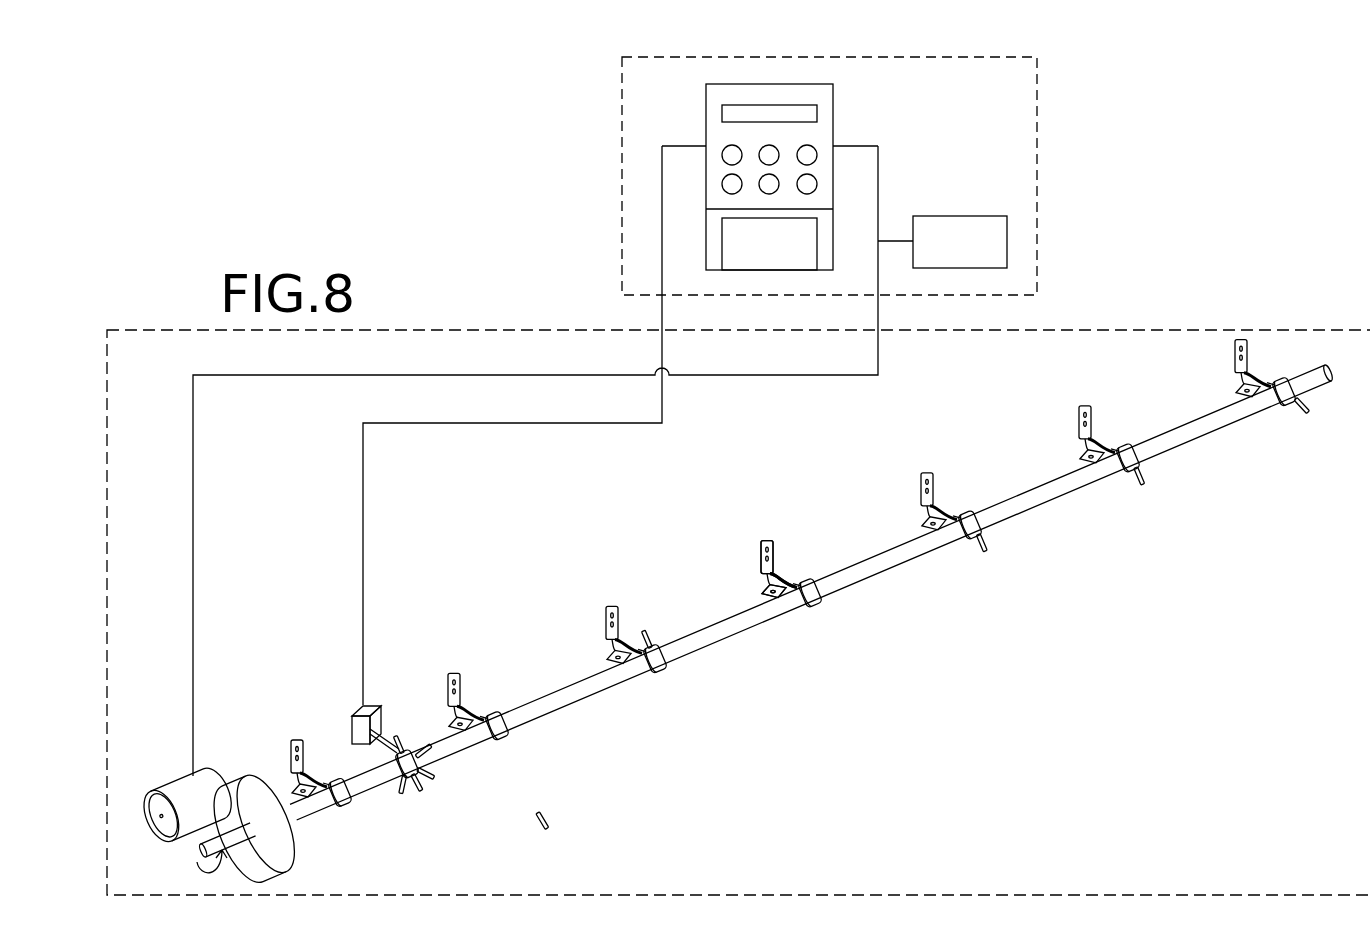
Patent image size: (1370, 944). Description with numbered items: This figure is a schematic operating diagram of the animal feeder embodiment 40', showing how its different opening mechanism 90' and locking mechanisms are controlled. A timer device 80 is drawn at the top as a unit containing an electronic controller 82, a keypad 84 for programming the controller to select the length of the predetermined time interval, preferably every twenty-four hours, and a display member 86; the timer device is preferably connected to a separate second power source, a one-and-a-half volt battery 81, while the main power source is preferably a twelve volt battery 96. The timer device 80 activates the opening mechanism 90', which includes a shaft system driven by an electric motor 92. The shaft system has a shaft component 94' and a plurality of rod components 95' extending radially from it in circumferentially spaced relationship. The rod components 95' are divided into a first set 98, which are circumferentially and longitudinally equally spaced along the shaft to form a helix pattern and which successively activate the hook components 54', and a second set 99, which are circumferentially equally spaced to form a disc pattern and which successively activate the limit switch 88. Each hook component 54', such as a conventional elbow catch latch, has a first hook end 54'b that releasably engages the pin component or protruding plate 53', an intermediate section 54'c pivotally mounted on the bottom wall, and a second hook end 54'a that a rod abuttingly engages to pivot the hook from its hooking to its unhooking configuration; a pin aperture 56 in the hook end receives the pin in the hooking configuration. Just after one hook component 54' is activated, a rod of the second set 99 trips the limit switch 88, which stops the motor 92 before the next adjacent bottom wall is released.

The irrigation control system 40' is at (1167, 72).
The timer device 80 is at (1037, 137).
The 1.5 VDC battery 81 is at (790, 257).
The electronic controller 82 is at (833, 112).
The keypad 84 is at (812, 186).
The display member 86 is at (723, 112).
The limit switch member 88 is at (358, 705).
The opening mechanism 90' is at (738, 573).
The electric motor 92 is at (155, 780).
The shaft component 94' is at (766, 611).
The rod components 95' is at (830, 629).
The 12 VDC battery 96 is at (1007, 241).
The first set 98 is at (868, 626).
The second set 99 is at (394, 810).
The pin component 53' is at (861, 535).
The hook component 54' is at (548, 630).
The second hook end 54'a is at (822, 559).
The first hook end 54'b is at (773, 533).
The intermediate section 54'c is at (792, 615).
The pin aperture 56 is at (770, 590).